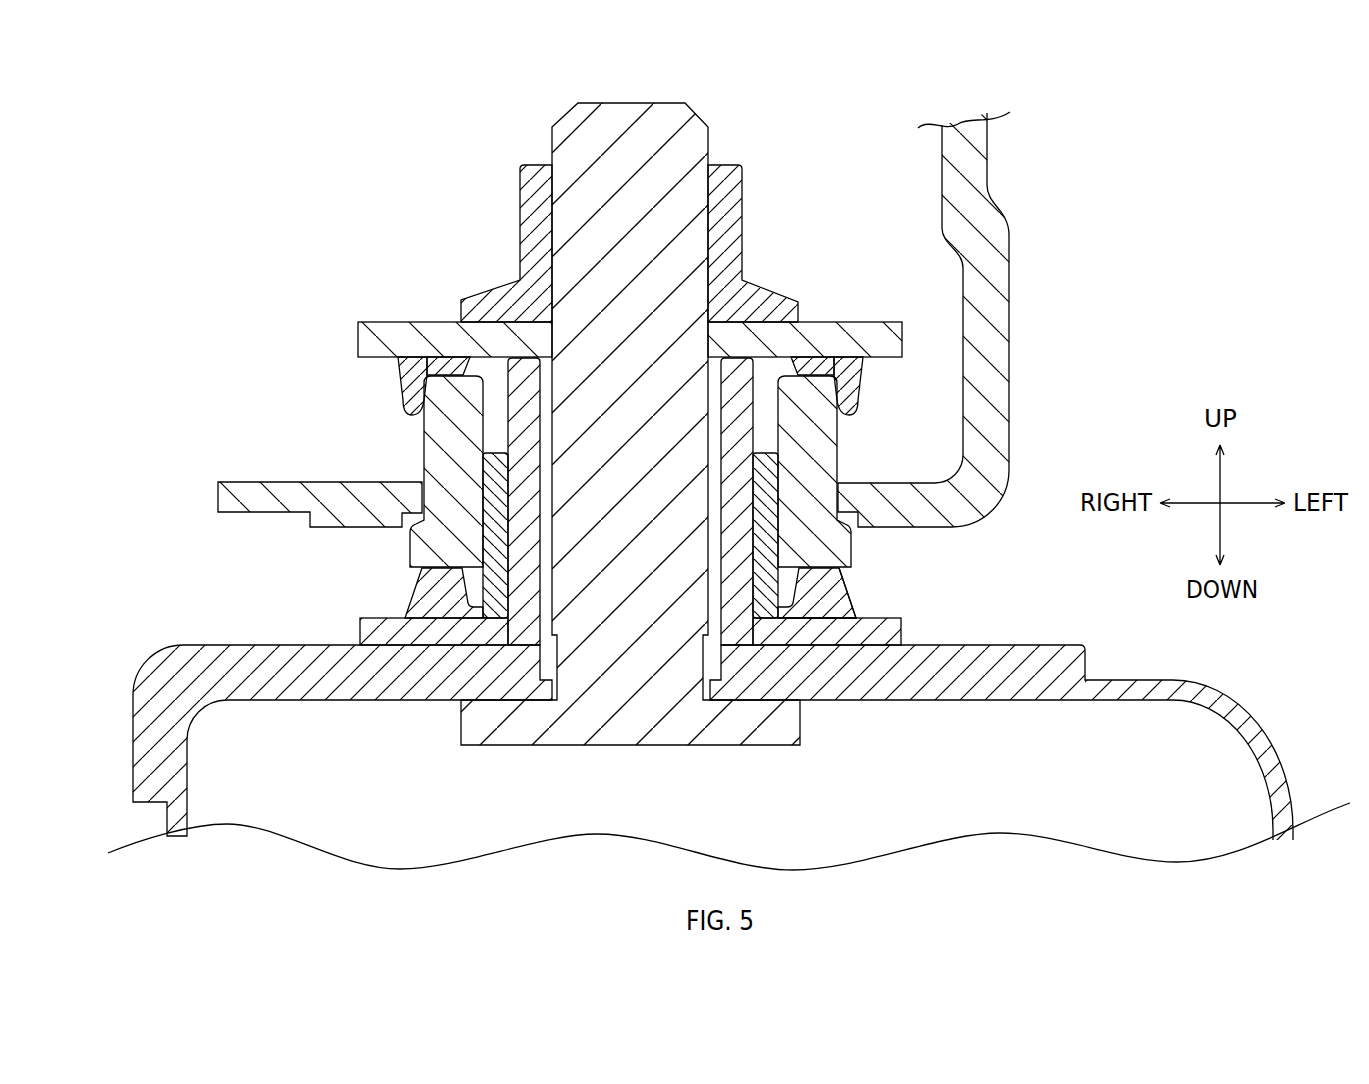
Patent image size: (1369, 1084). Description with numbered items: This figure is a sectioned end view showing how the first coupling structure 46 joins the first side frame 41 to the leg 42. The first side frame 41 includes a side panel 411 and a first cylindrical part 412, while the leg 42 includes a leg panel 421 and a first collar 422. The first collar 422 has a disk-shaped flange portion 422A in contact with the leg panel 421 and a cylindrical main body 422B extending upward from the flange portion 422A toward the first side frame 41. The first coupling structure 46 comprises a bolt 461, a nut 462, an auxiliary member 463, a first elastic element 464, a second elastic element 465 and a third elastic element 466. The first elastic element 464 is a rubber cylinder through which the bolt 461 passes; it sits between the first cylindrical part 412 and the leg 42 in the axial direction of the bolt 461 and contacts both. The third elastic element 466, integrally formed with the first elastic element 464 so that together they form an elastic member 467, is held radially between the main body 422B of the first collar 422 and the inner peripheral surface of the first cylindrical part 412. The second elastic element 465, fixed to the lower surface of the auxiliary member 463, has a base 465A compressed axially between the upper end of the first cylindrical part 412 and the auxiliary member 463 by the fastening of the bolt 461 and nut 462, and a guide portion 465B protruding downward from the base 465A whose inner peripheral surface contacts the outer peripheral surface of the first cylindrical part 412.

The first side frame 41 is at (674, 339).
The side panel 411 is at (997, 314).
The first cylindrical part 412 is at (822, 447).
The leg 42 is at (1018, 624).
The leg panel 421 is at (173, 672).
The first collar 422 is at (569, 501).
The flange portion 422A is at (374, 636).
The main body 422B is at (520, 549).
The first coupling structure 46 is at (346, 138).
The bolt 461 is at (684, 732).
The nut 462 is at (532, 186).
The auxiliary member 463 is at (385, 333).
The first elastic element 464 is at (835, 582).
The second elastic element 465 is at (565, 347).
The base 465A is at (430, 368).
The guide portion 465B is at (400, 403).
The third elastic element 466 is at (766, 542).
The elastic member 467 is at (867, 602).